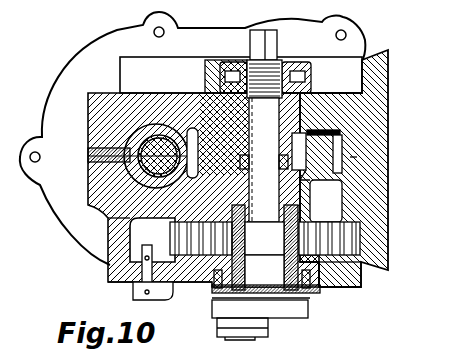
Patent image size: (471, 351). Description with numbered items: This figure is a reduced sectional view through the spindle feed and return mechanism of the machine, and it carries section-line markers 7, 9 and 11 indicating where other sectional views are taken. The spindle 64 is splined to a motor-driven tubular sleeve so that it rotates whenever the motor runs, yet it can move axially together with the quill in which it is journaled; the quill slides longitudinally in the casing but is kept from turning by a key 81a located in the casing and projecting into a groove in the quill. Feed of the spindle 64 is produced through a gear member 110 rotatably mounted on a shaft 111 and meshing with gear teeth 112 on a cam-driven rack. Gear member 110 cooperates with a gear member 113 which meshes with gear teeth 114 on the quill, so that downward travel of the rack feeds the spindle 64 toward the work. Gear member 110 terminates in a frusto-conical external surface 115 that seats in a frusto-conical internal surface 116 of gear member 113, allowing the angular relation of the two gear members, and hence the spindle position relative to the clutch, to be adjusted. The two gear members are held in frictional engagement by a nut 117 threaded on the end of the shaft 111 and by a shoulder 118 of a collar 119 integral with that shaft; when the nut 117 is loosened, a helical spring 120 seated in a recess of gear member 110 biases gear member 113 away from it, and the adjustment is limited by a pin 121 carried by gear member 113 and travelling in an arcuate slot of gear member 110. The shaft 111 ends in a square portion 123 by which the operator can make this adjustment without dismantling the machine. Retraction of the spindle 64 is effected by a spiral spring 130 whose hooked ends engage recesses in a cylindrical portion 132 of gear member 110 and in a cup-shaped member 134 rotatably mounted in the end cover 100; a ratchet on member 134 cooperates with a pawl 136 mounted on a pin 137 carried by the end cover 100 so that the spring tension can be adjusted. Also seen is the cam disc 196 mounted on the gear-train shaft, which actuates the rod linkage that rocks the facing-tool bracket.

The section line 7- 7 is at (88, 156).
The reference 9 is at (358, 157).
The section line 11- 11 is at (245, 240).
The spindle 64 is at (130, 135).
The key 81a is at (88, 163).
The end cover 100 is at (110, 276).
The gear member 110 is at (212, 288).
The shaft 111 is at (270, 107).
The gear teeth 112 is at (100, 203).
The gear member 113 is at (215, 118).
The gear teeth 114 is at (158, 147).
The frusto-conical external surface 115 is at (246, 185).
The frusto-conical internal surface 116 is at (218, 155).
The nut 117 is at (290, 62).
The shoulder 118 is at (232, 247).
The collar 119 is at (272, 256).
The helical spring 120 is at (252, 162).
The pin 121 is at (298, 147).
The square portion 123 is at (258, 36).
The spiral spring 130 is at (133, 219).
The cylindrical portion 132 is at (249, 236).
The cup-shaped member 134 is at (341, 262).
The pawl 136 is at (160, 262).
The pin 137 is at (120, 282).
The cam disc 196 is at (297, 312).